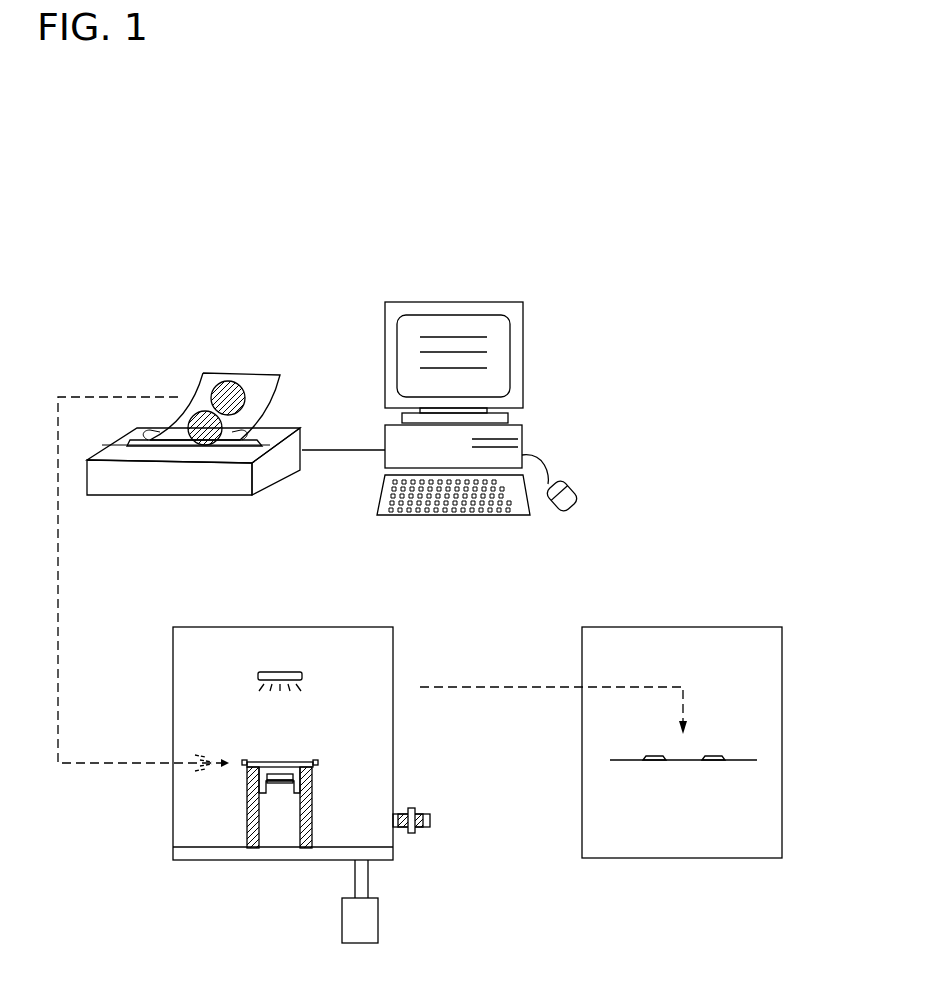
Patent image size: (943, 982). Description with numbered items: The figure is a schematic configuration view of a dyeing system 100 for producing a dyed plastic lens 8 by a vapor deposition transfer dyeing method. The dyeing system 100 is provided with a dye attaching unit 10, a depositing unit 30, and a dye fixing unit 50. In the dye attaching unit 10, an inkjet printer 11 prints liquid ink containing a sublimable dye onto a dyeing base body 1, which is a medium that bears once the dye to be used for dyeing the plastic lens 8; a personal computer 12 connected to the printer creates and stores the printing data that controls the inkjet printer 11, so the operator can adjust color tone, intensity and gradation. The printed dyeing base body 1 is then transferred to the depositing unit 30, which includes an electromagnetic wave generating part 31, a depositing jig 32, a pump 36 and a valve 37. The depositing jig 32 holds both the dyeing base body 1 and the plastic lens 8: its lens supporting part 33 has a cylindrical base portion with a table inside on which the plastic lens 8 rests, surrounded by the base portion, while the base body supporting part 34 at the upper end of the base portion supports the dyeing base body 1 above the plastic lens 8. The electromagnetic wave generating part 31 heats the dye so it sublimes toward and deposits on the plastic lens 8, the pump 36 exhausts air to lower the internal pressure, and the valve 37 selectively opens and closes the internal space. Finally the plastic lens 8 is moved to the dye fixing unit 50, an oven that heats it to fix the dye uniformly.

The dyeing system 100 is at (418, 190).
The dye attaching unit 10 is at (307, 285).
The dyeing base body 1 is at (228, 377).
The inkjet printer 11 is at (175, 485).
The personal computer 12 is at (513, 423).
The depositing unit 30 is at (393, 640).
The electromagnetic wave generating part 31 is at (288, 672).
The depositing jig 32 is at (328, 807).
The lens supporting part 33 is at (310, 780).
The plastic lens 8 is at (278, 783).
The base body supporting part 34 is at (242, 772).
The valve 37 is at (418, 810).
The pump 36 is at (363, 920).
The dye fixing unit 50 is at (782, 638).